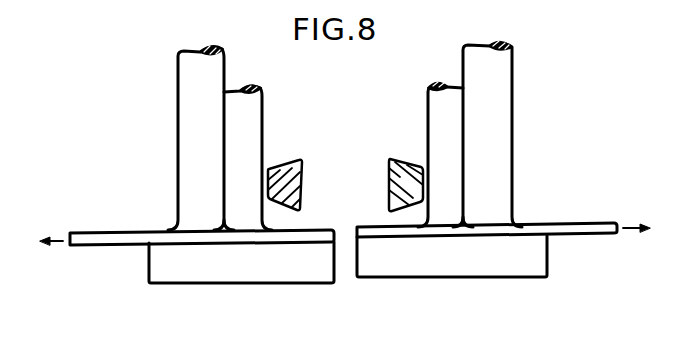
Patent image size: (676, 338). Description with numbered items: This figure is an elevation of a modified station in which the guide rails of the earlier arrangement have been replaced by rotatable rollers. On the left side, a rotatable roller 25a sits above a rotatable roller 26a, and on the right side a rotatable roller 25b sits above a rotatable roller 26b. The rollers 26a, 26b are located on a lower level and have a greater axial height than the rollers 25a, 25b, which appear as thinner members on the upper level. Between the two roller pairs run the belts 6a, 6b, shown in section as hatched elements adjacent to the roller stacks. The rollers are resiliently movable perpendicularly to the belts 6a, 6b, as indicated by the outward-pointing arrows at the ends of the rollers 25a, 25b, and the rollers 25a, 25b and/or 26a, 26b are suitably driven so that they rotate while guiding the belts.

The belt 6a is at (290, 167).
The belt 6b is at (388, 158).
The rotatable roller 25a is at (125, 234).
The rotatable roller 25b is at (568, 227).
The rotatable roller 26a is at (210, 270).
The rotatable roller 26b is at (440, 262).